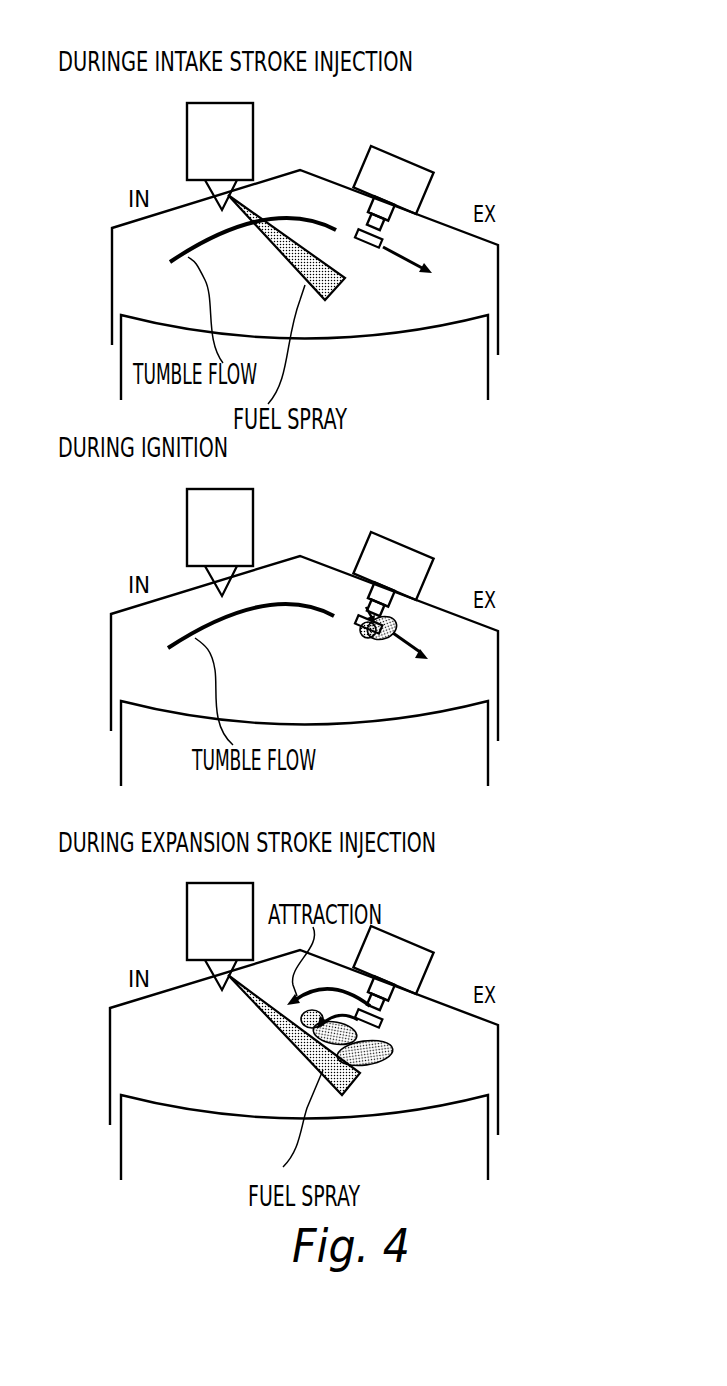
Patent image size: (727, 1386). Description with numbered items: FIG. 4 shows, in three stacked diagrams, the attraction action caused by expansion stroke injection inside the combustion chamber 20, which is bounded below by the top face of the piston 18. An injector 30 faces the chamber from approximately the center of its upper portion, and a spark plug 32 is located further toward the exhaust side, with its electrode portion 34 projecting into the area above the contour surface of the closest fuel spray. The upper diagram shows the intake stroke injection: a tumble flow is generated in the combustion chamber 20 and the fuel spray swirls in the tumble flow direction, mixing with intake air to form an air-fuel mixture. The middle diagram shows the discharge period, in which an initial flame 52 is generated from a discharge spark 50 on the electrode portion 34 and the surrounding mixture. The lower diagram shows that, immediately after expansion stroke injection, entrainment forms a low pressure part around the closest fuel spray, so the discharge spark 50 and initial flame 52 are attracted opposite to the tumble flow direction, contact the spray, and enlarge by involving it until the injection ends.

The piston 18 is at (472, 373).
The combustion chamber 20 is at (483, 259).
The injector 30 is at (214, 129).
The spark plug 32 is at (402, 160).
The electrode portion 34 is at (353, 236).
The discharge spark 50 is at (381, 640).
The initial flame 52 is at (397, 640).